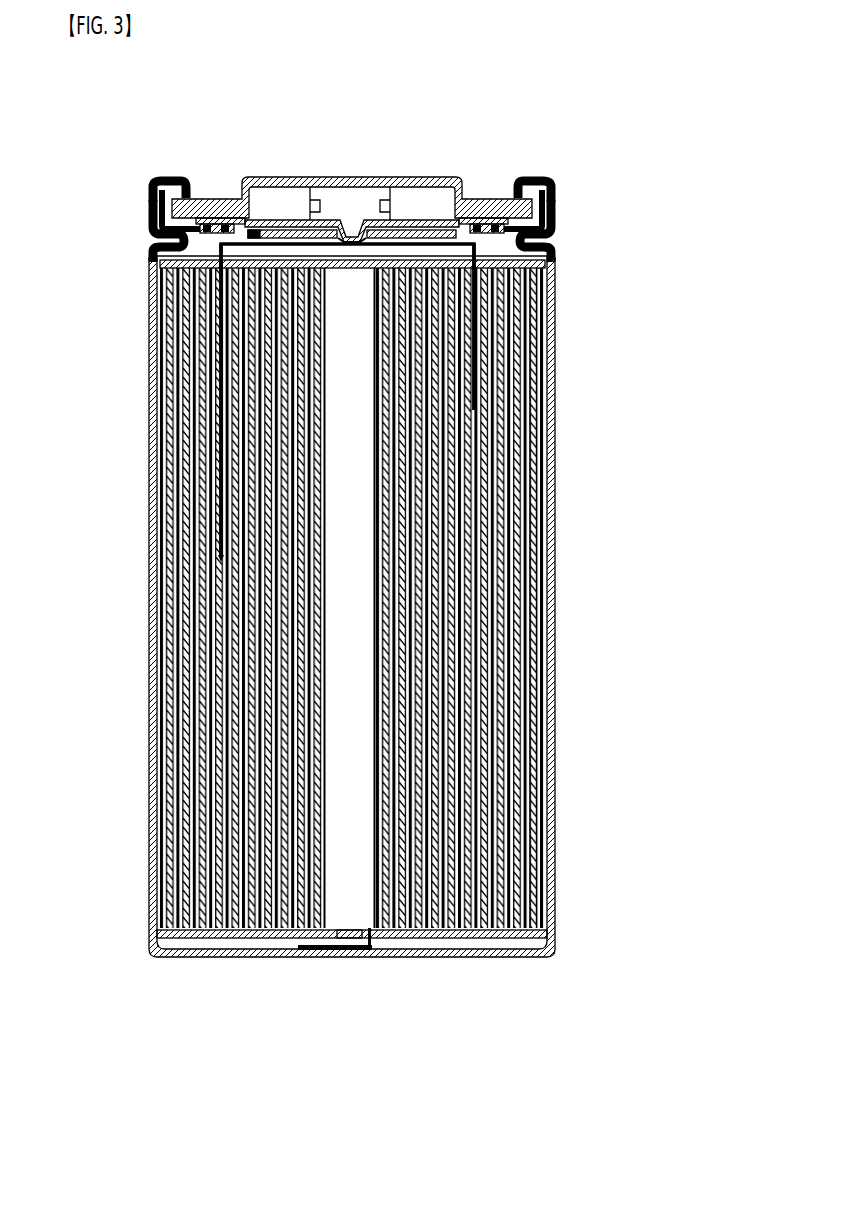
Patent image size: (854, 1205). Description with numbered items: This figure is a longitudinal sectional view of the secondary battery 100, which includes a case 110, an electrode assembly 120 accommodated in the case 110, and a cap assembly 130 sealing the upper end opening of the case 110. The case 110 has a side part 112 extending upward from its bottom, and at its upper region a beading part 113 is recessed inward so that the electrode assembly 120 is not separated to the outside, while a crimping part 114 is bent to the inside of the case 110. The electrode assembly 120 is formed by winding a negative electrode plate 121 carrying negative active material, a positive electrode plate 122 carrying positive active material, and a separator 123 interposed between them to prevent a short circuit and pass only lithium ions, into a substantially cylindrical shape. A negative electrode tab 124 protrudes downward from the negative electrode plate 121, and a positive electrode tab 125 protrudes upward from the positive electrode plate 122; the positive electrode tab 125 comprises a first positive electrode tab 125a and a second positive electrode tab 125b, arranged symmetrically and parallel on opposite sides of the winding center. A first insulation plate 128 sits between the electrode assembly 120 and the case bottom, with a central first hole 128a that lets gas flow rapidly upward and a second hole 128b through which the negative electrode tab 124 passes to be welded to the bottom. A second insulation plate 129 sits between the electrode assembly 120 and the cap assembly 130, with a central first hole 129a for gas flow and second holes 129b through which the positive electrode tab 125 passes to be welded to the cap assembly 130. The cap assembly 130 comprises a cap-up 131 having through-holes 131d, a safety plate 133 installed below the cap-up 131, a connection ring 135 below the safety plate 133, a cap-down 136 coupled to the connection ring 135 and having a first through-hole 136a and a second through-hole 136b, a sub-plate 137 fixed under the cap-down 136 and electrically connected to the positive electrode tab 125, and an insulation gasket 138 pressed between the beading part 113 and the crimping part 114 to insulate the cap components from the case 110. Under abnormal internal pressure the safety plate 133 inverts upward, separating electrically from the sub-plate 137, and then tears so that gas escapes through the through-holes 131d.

The secondary battery 100 is at (606, 128).
The case 110 is at (562, 862).
The side part 112 is at (553, 792).
The beading part 113 is at (548, 240).
The crimping part 114 is at (525, 200).
The electrode assembly 120 is at (648, 503).
The negative electrode plate 121 is at (550, 512).
The positive electrode plate 122 is at (528, 605).
The separator 123 is at (538, 555).
The negative electrode tab 124 is at (395, 935).
The positive electrode tab 125 is at (648, 312).
The first positive electrode tab 125a is at (440, 395).
The second positive electrode tab 125b is at (478, 318).
The first insulation plate 128 is at (552, 932).
The first hole 128a is at (335, 955).
The second hole 128b is at (357, 940).
The second insulation plate 129 is at (225, 250).
The first hole 129a is at (335, 285).
The second holes 129b is at (285, 290).
The cap assembly 130 is at (220, 146).
The cap-up 131 is at (441, 185).
The through-holes 131d is at (324, 200).
The safety plate 133 is at (397, 222).
The connection ring 135 is at (217, 207).
The cap-down 136 is at (478, 232).
The first through-hole 136a is at (356, 238).
The second through-hole 136b is at (255, 232).
The sub-plate 137 is at (213, 229).
The insulation gasket 138 is at (545, 197).